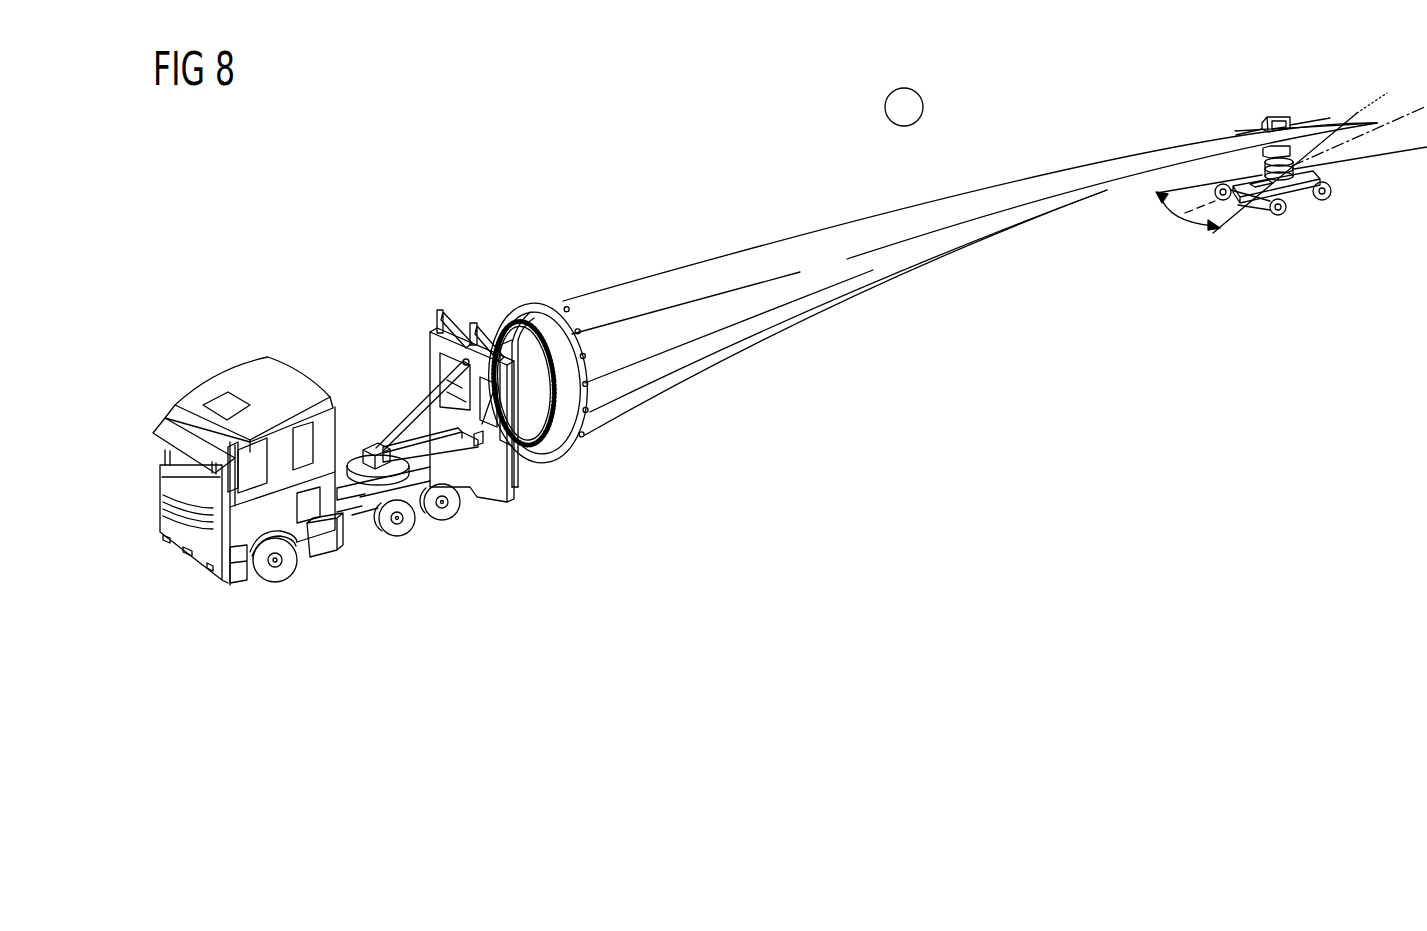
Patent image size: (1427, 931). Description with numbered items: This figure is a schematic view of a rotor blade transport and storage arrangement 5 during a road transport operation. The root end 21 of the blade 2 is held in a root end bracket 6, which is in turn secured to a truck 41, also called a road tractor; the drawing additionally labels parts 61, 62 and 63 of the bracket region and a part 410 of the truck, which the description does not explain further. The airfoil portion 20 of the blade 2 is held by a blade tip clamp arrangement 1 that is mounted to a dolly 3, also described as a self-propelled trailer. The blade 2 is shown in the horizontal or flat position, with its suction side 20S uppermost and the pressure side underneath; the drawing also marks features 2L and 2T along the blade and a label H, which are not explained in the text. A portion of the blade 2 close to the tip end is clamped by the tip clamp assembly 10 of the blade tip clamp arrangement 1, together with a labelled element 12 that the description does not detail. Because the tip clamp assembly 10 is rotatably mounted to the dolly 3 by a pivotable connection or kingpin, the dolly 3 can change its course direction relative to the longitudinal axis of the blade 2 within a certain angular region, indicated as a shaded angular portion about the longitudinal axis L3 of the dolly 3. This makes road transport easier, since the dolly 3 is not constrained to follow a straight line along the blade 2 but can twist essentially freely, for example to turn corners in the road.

The blade tip clamp arrangement 1 is at (1253, 82).
The blade 2 is at (697, 261).
The leading edge 2L is at (1018, 172).
The trailing edge 2T is at (1140, 187).
The airfoil portion 20 is at (783, 253).
The suction side 20S is at (1117, 167).
The root end 21 is at (522, 325).
The dolly 3 is at (1292, 183).
The rotor blade transport and storage arrangement 5 is at (960, 355).
The root end bracket 6 is at (478, 304).
The frame post 61 is at (441, 310).
The root ring 62 is at (551, 318).
The hydraulic strut 63 is at (460, 360).
The tip clamp assembly 10 is at (1279, 116).
The pivot post 12 is at (1277, 150).
The truck 41 is at (237, 378).
The turntable 410 is at (408, 420).
The horizontal reference H is at (904, 107).
The longitudinal axis of the dolly L3 is at (1407, 116).